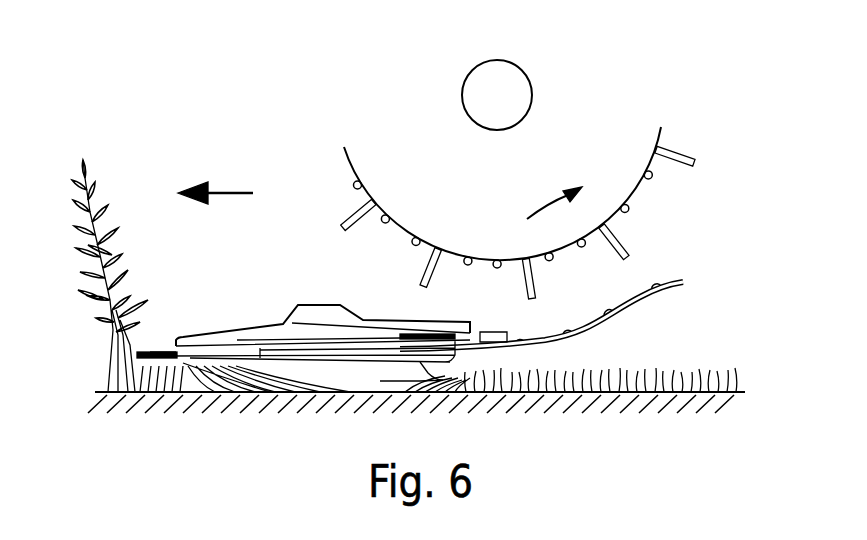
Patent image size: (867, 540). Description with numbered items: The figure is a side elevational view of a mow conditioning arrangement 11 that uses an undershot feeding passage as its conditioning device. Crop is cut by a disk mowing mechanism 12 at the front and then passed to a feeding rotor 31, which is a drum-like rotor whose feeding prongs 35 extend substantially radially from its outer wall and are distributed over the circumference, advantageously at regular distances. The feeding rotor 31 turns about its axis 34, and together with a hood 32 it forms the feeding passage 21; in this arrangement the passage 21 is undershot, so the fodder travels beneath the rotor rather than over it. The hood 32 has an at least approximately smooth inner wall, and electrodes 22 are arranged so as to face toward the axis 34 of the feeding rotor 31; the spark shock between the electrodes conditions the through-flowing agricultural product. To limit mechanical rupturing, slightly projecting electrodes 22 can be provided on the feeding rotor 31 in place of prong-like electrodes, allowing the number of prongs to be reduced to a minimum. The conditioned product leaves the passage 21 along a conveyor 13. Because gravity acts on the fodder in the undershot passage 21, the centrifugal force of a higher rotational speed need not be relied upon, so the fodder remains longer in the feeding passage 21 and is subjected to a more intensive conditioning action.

The mow conditioning arrangement 11 is at (591, 88).
The disk mowing mechanism 12 is at (270, 313).
The conveyor 13 is at (645, 303).
The feeding passage 21 is at (613, 282).
The electrodes 22 is at (385, 223).
The feeding rotor 31 is at (392, 300).
The hood 32 is at (600, 326).
The axis 34 is at (490, 97).
The tine 35 is at (688, 158).